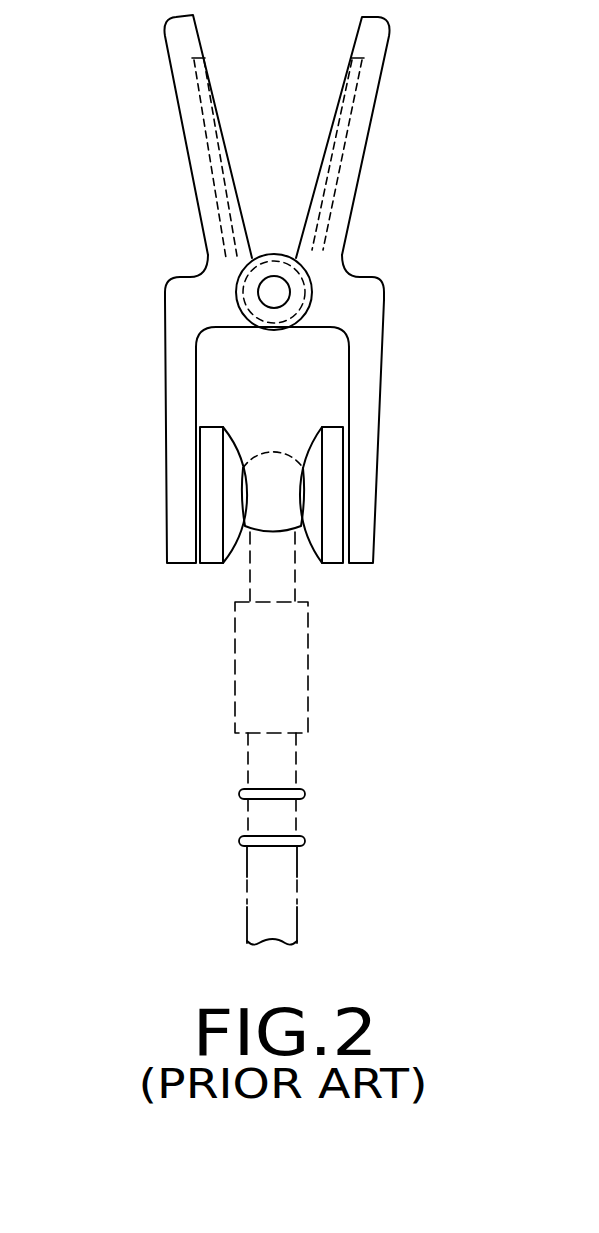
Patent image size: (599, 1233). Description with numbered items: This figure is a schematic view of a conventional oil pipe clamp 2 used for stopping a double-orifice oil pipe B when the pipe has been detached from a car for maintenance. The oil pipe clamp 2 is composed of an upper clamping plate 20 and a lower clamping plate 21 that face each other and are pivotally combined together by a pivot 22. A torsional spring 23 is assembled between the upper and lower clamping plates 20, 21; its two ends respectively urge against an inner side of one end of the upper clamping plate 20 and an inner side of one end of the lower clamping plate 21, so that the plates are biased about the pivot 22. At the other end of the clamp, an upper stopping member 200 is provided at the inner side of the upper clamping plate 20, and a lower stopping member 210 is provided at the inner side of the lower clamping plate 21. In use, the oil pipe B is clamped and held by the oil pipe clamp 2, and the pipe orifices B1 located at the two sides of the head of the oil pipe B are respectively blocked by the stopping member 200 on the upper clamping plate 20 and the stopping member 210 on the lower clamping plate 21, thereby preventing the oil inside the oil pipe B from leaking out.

The oil pipe clamp 2 is at (290, 289).
The upper clamping plate 20 is at (178, 377).
The lower clamping plate 21 is at (383, 372).
The pivot 22 is at (264, 290).
The torsional spring 23 is at (313, 298).
The upper stopping member 200 is at (212, 478).
The lower stopping member 210 is at (333, 481).
The pipe orifices B1 is at (247, 500).
The double-orifice oil pipe B is at (290, 657).